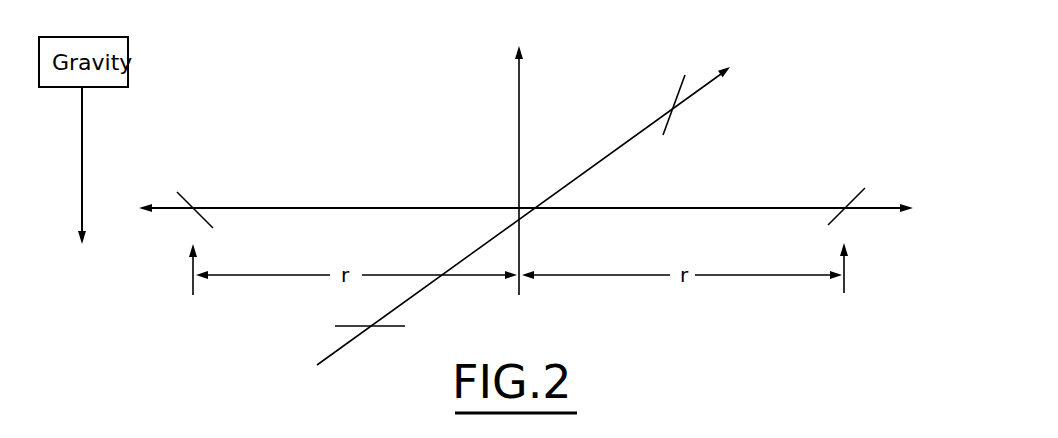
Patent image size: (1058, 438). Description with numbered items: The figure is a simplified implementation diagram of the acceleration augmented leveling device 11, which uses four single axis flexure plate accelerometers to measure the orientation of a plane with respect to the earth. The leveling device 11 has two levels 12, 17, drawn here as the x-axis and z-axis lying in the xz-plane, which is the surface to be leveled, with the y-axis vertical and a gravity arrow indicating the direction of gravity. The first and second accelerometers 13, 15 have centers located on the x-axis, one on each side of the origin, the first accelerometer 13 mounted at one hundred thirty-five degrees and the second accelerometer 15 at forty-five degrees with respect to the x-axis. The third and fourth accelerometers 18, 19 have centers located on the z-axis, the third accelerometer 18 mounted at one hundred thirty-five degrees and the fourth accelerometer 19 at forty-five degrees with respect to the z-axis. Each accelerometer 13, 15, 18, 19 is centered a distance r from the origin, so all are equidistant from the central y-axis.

The leveling device 11 is at (478, 135).
The level 12 is at (673, 208).
The first flexure plate accelerometer 13 is at (193, 207).
The second flexure plate accelerometer 15 is at (851, 203).
The level 17 is at (614, 150).
The third flexure plate accelerometer 18 is at (370, 324).
The fourth flexure plate accelerometer 19 is at (680, 88).